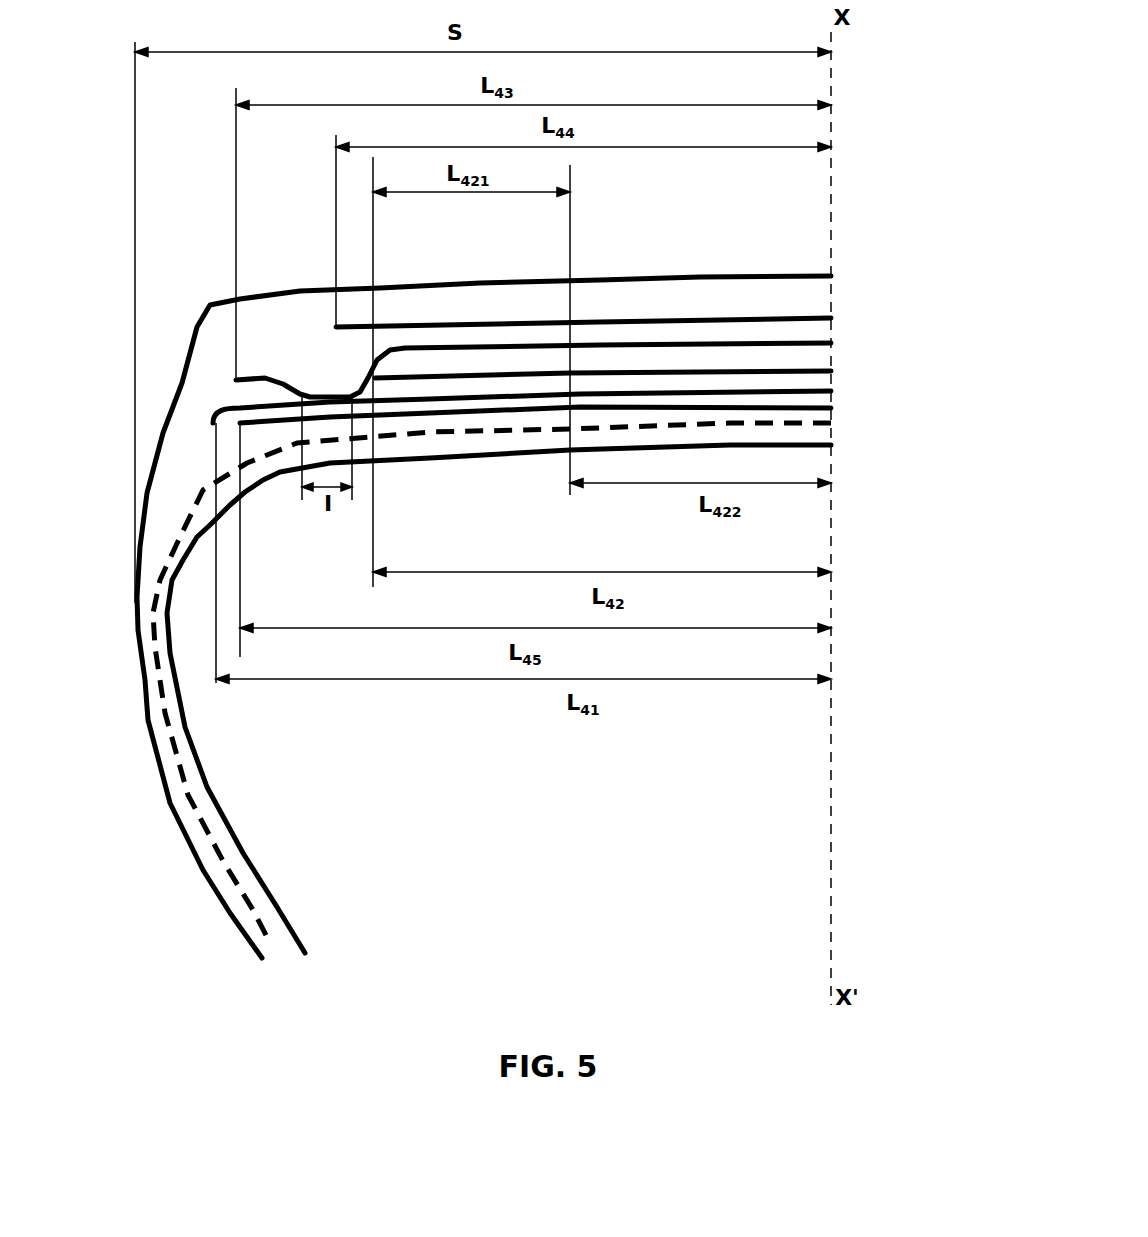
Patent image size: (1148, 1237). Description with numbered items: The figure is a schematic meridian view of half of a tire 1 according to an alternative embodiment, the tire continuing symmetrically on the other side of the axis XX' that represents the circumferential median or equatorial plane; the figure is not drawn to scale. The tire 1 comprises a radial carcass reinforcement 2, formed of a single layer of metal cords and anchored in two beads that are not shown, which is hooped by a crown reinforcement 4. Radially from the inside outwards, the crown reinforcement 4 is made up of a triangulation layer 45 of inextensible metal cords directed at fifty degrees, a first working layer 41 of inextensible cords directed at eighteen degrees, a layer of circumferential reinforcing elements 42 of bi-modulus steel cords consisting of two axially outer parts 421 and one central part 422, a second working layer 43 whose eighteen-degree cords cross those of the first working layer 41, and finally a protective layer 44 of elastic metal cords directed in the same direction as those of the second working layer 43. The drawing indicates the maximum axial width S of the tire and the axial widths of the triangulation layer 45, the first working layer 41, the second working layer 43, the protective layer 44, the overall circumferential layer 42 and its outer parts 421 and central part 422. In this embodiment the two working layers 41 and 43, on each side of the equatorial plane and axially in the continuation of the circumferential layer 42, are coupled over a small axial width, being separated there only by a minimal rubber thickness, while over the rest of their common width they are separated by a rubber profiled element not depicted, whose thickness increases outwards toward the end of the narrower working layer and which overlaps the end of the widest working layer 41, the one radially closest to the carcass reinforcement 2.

The tire 1 is at (229, 268).
The radial carcass reinforcement 2 is at (185, 553).
The crown reinforcement 4 is at (851, 352).
The first working layer 41 is at (831, 392).
The layer of circumferential reinforcing elements 42 is at (603, 360).
The axially outer parts 421 is at (412, 377).
The central part 422 is at (733, 370).
The second working layer 43 is at (487, 343).
The protective layer 44 is at (607, 318).
The triangulation layer 45 is at (768, 412).